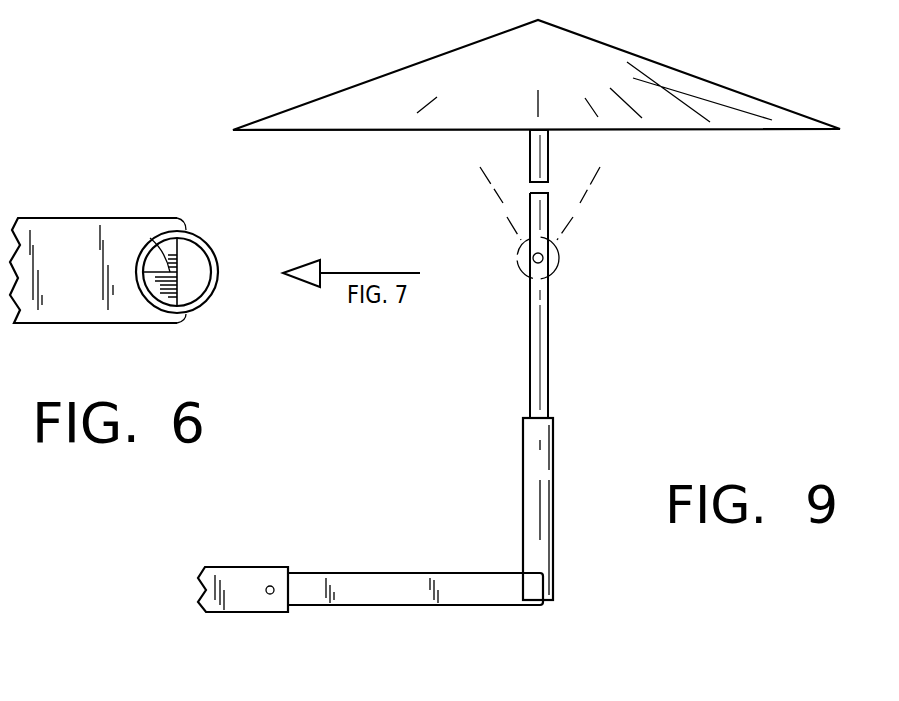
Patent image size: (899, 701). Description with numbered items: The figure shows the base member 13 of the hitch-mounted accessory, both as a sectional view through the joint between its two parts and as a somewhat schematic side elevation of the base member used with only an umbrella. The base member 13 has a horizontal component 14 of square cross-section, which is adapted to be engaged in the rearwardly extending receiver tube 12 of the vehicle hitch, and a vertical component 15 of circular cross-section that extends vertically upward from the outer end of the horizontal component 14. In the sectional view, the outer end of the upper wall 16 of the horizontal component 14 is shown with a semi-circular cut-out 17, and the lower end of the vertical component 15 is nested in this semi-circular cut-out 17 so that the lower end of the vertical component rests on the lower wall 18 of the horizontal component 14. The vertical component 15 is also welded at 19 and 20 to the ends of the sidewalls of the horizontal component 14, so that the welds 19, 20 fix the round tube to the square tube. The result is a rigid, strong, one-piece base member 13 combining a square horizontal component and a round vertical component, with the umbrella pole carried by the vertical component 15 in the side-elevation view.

In FIG. 9, the receiver tube 12 is at (255, 573).
In FIG. 9, the base member 13 is at (434, 555).
In FIG. 6, the horizontal component 14 is at (102, 218).
In FIG. 9, the horizontal component 14 is at (380, 605).
In FIG. 6, the vertical component 15 is at (203, 305).
In FIG. 9, the vertical component 15 is at (554, 497).
In FIG. 6, the upper wall 16 is at (82, 279).
In FIG. 6, the semi-circular cut-out 17 is at (173, 270).
In FIG. 6, the lower wall 18 is at (174, 268).
In FIG. 6, the weld 19 is at (181, 218).
In FIG. 6, the weld 20 is at (183, 322).